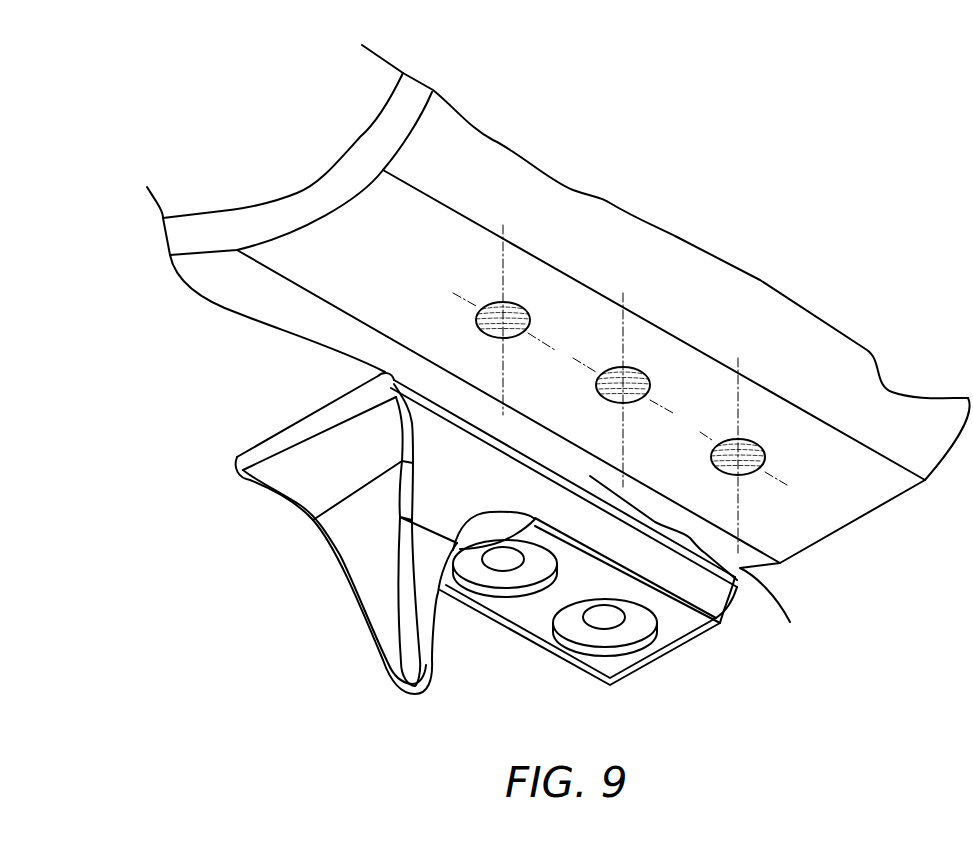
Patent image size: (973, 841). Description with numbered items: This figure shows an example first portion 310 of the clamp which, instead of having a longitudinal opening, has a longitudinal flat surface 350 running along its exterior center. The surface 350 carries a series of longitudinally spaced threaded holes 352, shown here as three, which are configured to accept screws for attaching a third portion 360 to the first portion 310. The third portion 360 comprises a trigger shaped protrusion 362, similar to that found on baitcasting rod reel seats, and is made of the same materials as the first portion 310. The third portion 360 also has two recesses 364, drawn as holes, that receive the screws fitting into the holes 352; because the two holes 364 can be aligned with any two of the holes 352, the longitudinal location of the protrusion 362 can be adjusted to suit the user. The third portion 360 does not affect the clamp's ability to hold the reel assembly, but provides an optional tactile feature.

The first portion 310 is at (387, 145).
The longitudinal surface 350 is at (362, 276).
The threaded holes 352 is at (517, 303).
The third portion 360 is at (667, 627).
The trigger shaped protrusion 362 is at (383, 605).
The recesses 364 is at (604, 617).